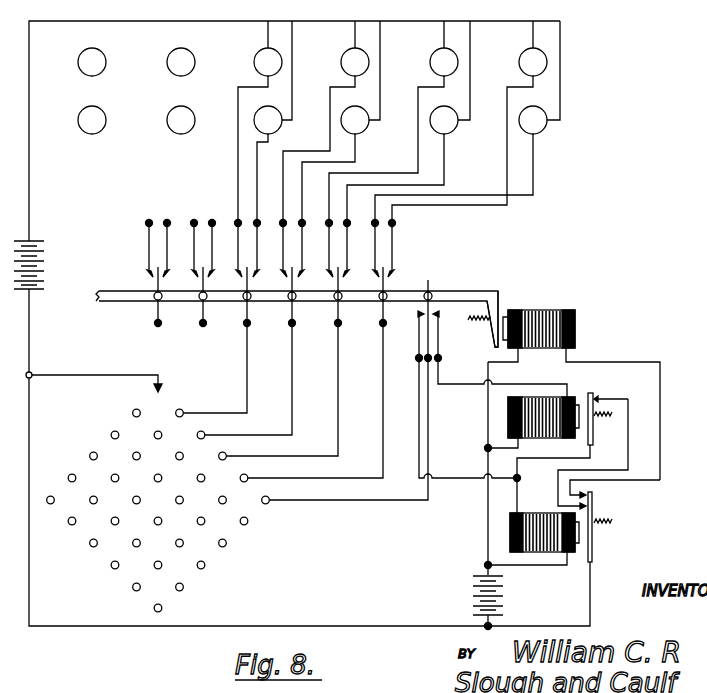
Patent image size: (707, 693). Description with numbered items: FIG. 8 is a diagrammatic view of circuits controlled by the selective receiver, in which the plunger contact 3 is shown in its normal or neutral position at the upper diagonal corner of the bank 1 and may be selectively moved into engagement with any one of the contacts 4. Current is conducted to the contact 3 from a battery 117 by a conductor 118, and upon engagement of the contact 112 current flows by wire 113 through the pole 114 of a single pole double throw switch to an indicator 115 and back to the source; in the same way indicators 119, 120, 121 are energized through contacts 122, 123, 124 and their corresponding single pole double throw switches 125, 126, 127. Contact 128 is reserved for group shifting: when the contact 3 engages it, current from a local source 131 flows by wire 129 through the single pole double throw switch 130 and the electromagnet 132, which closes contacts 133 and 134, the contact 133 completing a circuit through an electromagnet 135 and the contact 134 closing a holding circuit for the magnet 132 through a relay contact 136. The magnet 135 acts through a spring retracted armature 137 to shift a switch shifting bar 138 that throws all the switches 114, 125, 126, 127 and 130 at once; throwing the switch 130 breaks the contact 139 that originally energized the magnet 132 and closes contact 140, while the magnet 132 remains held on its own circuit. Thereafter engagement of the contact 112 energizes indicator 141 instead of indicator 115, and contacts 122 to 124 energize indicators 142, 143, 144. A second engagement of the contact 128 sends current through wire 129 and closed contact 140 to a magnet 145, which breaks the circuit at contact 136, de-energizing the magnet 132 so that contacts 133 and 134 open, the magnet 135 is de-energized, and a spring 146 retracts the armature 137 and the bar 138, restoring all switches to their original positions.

The bank 1 is at (116, 553).
The plunger contact 3 is at (163, 390).
The contacts 4 is at (205, 565).
The contact 112 is at (183, 410).
The wire 113 is at (247, 383).
The pole of single pole double throw switch 114 is at (238, 261).
The indicator 115 is at (258, 53).
The battery 117 is at (43, 263).
The conductor 118 is at (92, 373).
The indicator 119 is at (346, 53).
The indicator 120 is at (435, 53).
The indicator 121 is at (524, 53).
The contact 122 is at (205, 434).
The contact 123 is at (227, 456).
The contact 124 is at (248, 478).
The single pole double throw switch 125 is at (283, 261).
The single pole double throw switch 126 is at (329, 261).
The single pole double throw switch 127 is at (375, 261).
The contact 128 is at (270, 500).
The wire 129 is at (388, 501).
The single pole double throw switch 130 is at (424, 338).
The local source 131 is at (479, 590).
The electromagnet 132 is at (533, 513).
The contact 133 is at (594, 495).
The contact 134 is at (594, 506).
The electromagnet 135 is at (546, 312).
The relay contact 136 is at (594, 398).
The armature 137 is at (498, 305).
The switch shifting bar 138 is at (457, 291).
The contact 139 is at (418, 315).
The contact 140 is at (444, 311).
The indicator 141 is at (278, 127).
The indicator 142 is at (365, 127).
The indicator 143 is at (454, 127).
The indicator 144 is at (543, 127).
The magnet 145 is at (545, 438).
The spring 146 is at (478, 322).